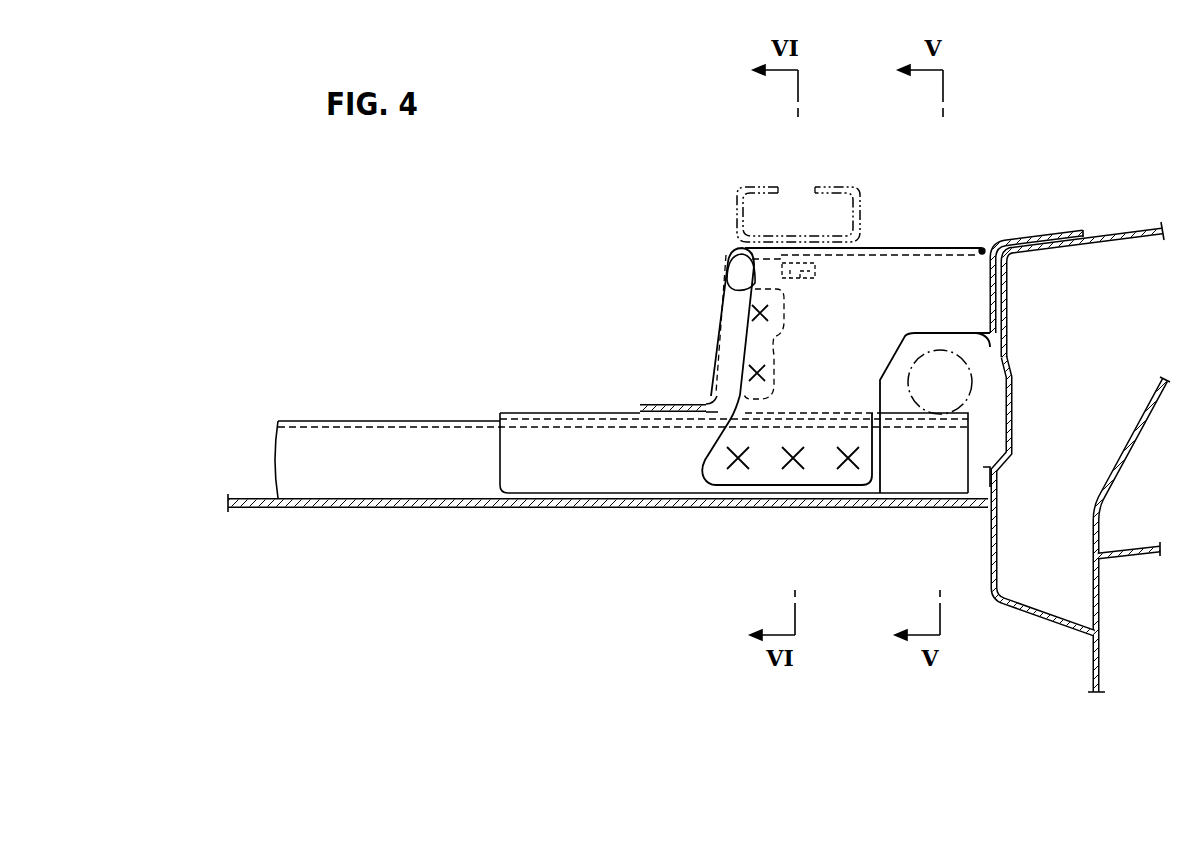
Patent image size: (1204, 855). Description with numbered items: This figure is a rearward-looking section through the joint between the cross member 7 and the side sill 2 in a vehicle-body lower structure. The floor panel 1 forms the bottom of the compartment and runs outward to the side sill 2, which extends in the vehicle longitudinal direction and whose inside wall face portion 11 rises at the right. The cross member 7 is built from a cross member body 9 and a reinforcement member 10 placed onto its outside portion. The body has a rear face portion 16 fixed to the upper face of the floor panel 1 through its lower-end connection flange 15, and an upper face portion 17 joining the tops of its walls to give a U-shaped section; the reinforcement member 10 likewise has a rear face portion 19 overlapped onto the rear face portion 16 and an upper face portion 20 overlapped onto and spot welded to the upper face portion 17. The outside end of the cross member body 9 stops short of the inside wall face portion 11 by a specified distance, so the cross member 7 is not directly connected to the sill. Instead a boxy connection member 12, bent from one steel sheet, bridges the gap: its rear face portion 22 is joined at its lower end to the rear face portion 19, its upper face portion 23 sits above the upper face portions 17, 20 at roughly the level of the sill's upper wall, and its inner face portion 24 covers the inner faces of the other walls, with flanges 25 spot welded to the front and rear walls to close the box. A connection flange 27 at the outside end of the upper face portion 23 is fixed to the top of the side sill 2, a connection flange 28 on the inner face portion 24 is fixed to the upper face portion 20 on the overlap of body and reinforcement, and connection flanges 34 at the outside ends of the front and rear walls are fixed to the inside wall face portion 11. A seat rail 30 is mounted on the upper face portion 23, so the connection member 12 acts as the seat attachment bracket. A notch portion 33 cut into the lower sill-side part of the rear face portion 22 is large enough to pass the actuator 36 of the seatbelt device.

The floor panel 1 is at (250, 512).
The side sill 2 is at (1131, 218).
The cross member 7 is at (718, 443).
The cross member body 9 is at (354, 411).
The reinforcement member 10 is at (718, 454).
The inside wall face portion of the side sill 11 is at (988, 543).
The connection member 12 is at (712, 293).
The lower-end connection flange 15 is at (355, 494).
The rear face portion 16 is at (284, 472).
The upper face portion 17 is at (403, 418).
The rear face portion 19 is at (597, 474).
The upper face portion 20 is at (510, 410).
The rear face portion 22 is at (903, 267).
The upper face portion 23 is at (872, 248).
The inner face portion 24 is at (714, 342).
The flange 25 is at (773, 338).
The connection flange 27 is at (1057, 231).
The connection flange 28 is at (671, 405).
The seat rail 30 is at (759, 186).
The notch portion 33 is at (1002, 336).
The connection flange 34 is at (987, 292).
The actuator 36 is at (972, 372).